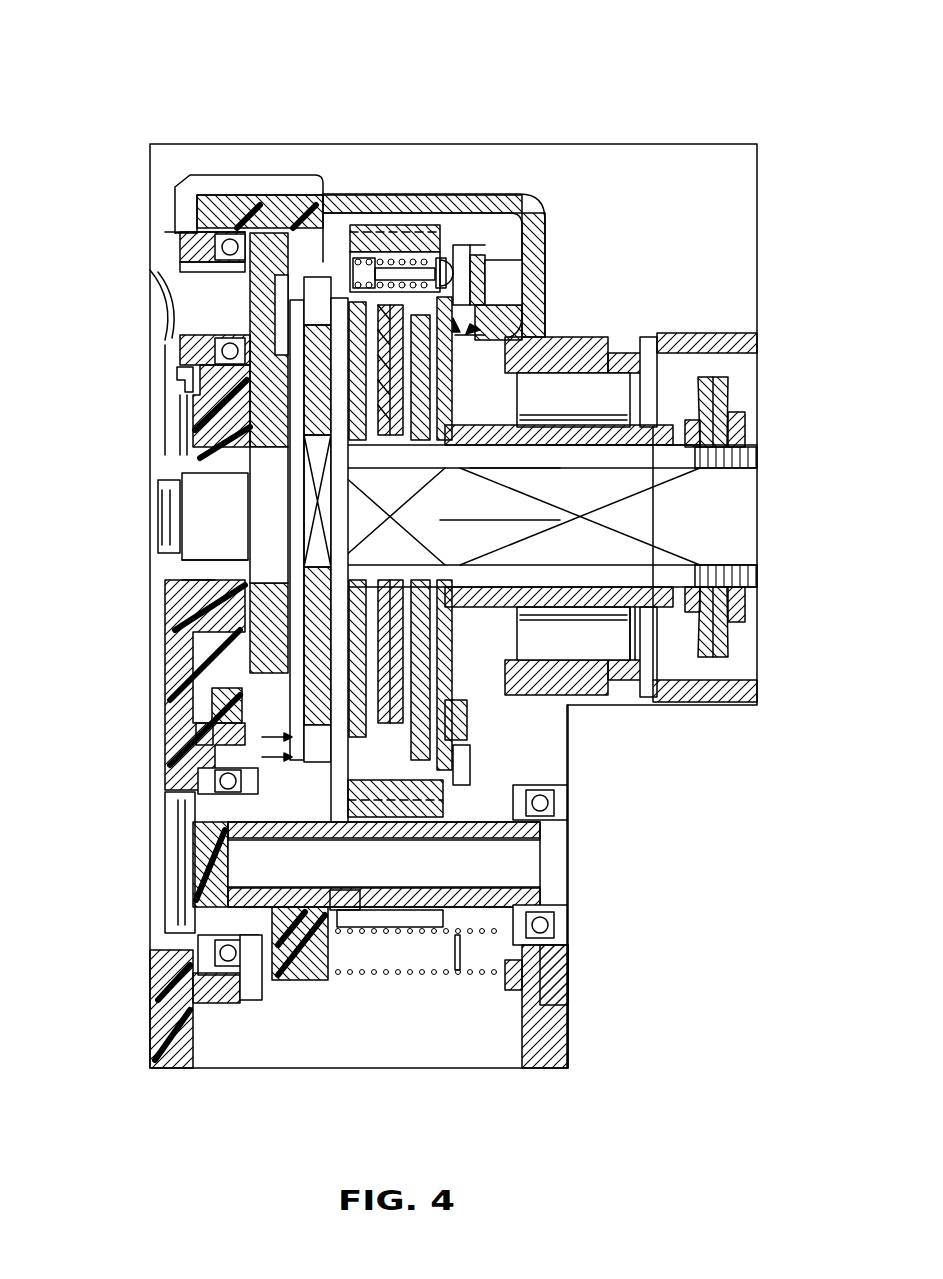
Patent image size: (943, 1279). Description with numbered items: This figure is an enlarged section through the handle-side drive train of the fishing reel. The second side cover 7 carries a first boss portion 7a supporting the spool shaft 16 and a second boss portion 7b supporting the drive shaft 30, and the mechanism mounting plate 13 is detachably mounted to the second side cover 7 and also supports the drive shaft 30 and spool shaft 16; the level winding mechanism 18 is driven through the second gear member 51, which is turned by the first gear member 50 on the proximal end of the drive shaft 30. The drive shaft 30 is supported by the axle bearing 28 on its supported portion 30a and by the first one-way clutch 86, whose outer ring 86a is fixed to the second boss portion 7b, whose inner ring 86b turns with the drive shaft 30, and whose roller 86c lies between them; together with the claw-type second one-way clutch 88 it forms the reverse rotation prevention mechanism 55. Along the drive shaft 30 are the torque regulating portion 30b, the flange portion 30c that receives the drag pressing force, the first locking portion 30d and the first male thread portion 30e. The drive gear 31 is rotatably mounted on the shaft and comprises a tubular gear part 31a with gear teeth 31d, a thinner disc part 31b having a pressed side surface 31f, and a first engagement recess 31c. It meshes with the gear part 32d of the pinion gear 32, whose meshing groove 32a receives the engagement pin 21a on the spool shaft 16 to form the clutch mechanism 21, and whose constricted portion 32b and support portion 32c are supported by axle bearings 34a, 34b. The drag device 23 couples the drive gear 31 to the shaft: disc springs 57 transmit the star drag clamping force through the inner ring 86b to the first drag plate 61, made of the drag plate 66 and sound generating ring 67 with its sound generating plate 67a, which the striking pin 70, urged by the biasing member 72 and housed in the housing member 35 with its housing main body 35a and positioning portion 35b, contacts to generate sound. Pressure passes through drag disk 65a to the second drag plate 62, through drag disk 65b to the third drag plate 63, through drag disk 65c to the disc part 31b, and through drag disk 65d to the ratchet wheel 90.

The second side cover 7 is at (552, 1020).
The first boss portion 7a is at (562, 1050).
The second boss portion 7b is at (562, 760).
The mechanism mounting plate 13 is at (185, 665).
The spool shaft 16 is at (345, 880).
The level winding mechanism 18 is at (388, 245).
The clutch mechanism 21 is at (185, 920).
The engagement pin 21a is at (190, 1012).
The drag device 23 is at (545, 300).
The axle bearing 28 is at (200, 460).
The drive shaft 30 is at (612, 405).
The supported portion 30a is at (215, 520).
The torque regulating portion 30b is at (188, 600).
The flange portion 30c is at (262, 530).
The first locking portion 30d is at (660, 562).
The first male thread portion 30e is at (722, 660).
The drive gear 31 is at (480, 850).
The gear part 31a is at (444, 297).
The disc part 31b is at (292, 205).
The first engagement recess 31c is at (455, 800).
The gear teeth 31d is at (314, 205).
The pressed side surface 31f is at (300, 205).
The pinion gear 32 is at (432, 930).
The meshing groove 32a is at (180, 838).
The constricted portion 32b is at (268, 920).
The support portion 32c is at (505, 930).
The gear part 32d is at (360, 930).
The axle bearing 34a is at (212, 958).
The axle bearing 34b is at (556, 960).
The housing member 35 is at (372, 215).
The housing main body 35a is at (340, 225).
The positioning portion 35b is at (355, 270).
The first gear member 50 is at (190, 380).
The second gear member 51 is at (250, 195).
The reverse rotation prevention mechanism 55 is at (190, 742).
The disc springs 57 is at (722, 400).
The first drag plate 61 is at (636, 66).
The second drag plate 62 is at (222, 245).
The third drag plate 63 is at (215, 285).
The drag disk 65a is at (440, 490).
The drag disk 65b is at (440, 548).
The drag disk 65c is at (473, 450).
The drag disk 65d is at (200, 318).
The drag plate 66 is at (525, 335).
The sound generating ring 67 is at (512, 312).
The sound generating plate 67a is at (230, 222).
The striking pin 70 is at (482, 330).
The biasing member 72 is at (476, 255).
The first one-way clutch 86 is at (565, 372).
The outer ring 86a is at (625, 378).
The inner ring 86b is at (616, 662).
The roller 86c is at (716, 330).
The second one-way clutch 88 is at (200, 800).
The ratchet wheel 90 is at (195, 215).